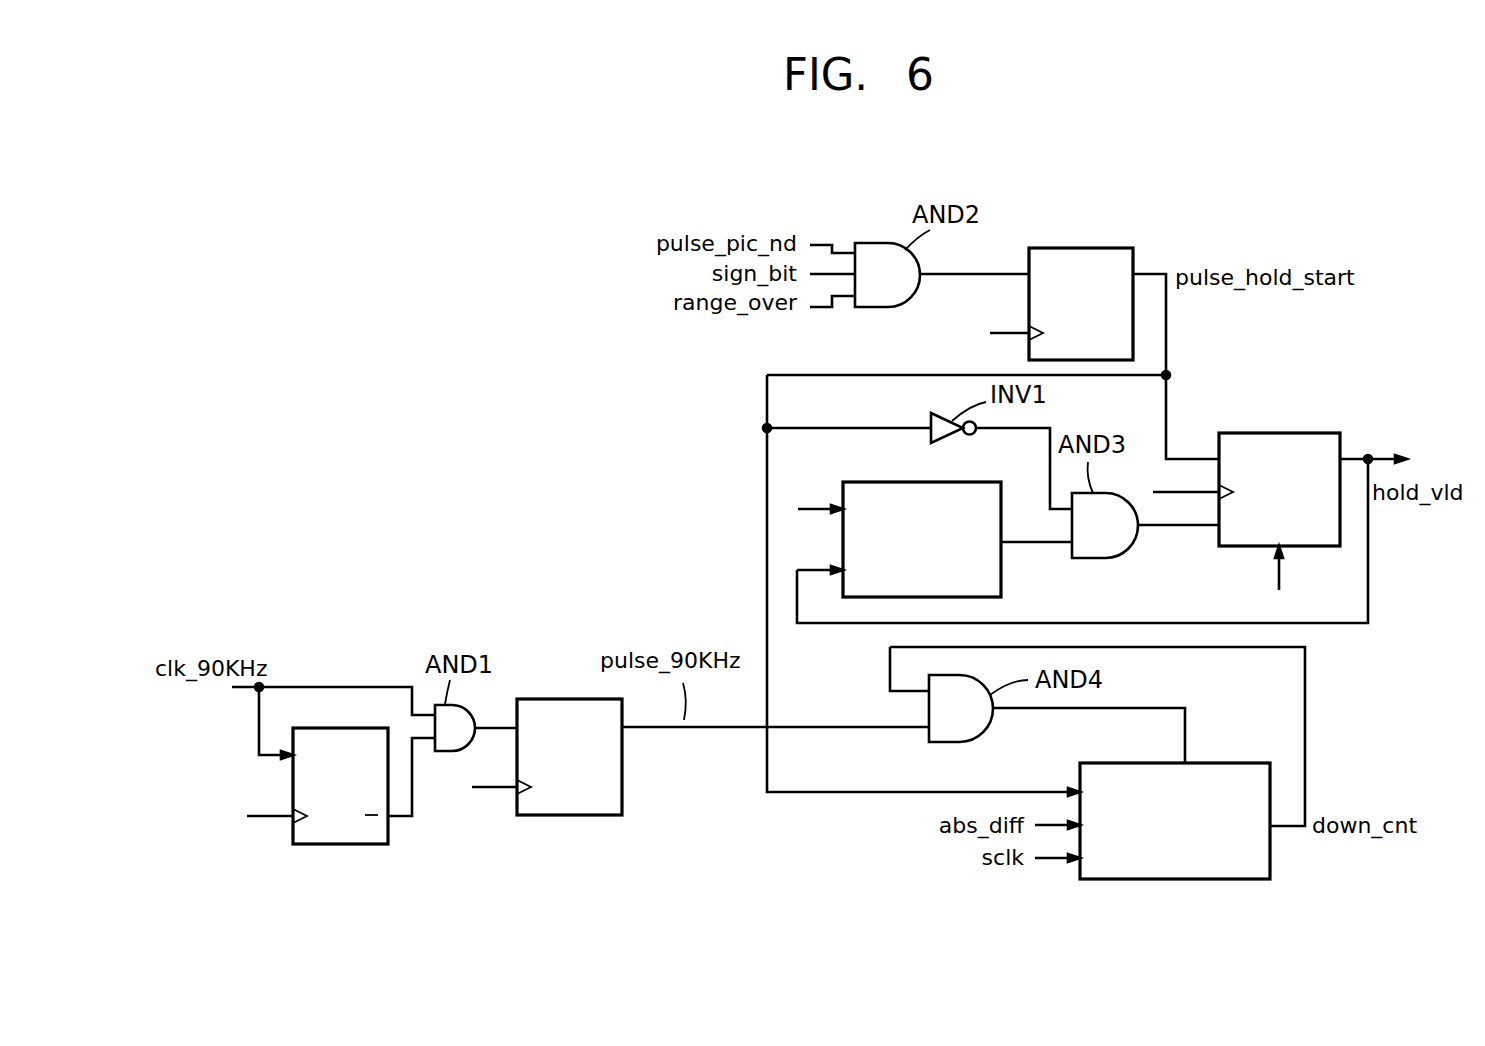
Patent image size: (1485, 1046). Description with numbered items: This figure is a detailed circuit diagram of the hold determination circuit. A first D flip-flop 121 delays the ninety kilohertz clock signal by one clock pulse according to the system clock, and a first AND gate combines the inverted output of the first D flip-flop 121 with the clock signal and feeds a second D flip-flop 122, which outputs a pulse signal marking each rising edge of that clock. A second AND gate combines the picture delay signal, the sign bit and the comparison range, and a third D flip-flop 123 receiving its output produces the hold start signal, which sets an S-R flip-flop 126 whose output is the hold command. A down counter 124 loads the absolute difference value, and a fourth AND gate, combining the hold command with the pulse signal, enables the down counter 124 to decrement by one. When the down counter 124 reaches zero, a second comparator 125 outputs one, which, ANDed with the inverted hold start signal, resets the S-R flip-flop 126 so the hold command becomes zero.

The first D flip-flop 121 is at (340, 845).
The second D flip-flop 122 is at (570, 816).
The third D flip-flop 123 is at (1083, 248).
The down counter 124 is at (1220, 763).
The second comparator 125 is at (1001, 578).
The S-R flip-flop 126 is at (1280, 433).